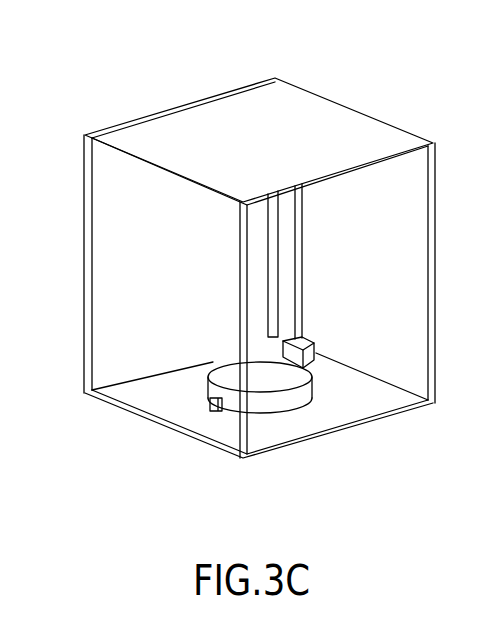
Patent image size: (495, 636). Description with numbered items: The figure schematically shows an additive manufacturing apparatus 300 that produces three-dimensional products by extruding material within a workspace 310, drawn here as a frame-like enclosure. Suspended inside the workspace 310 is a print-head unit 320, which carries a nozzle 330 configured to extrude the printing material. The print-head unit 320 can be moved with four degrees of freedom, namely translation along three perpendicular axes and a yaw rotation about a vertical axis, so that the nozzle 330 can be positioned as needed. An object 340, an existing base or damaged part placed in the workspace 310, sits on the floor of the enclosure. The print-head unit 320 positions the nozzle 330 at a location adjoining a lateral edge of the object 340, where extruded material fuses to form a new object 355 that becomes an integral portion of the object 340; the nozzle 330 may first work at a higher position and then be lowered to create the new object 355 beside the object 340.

The additive manufacturing apparatus 300 is at (175, 57).
The workspace 310 is at (160, 284).
The print-head unit 320 is at (323, 314).
The nozzle 330 is at (318, 365).
The object 340 is at (220, 367).
The new object 355 is at (210, 407).